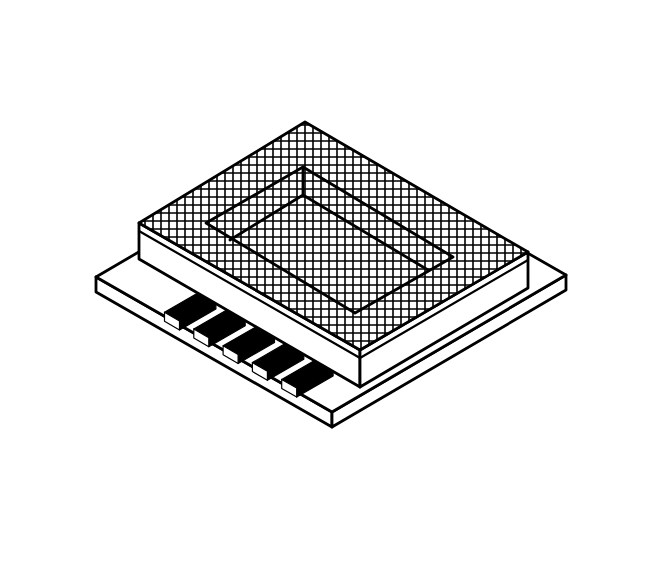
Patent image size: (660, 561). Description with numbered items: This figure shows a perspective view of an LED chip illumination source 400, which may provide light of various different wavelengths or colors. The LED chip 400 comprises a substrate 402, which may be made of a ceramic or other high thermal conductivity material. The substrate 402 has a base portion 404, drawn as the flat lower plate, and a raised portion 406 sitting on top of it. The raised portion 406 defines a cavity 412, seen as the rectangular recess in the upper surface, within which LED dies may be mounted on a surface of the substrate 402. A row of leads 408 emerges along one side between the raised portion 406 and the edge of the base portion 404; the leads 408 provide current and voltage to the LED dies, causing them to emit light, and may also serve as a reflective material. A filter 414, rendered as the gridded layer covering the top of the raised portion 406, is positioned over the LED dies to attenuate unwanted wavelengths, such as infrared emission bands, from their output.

The LED chip illumination source 400 is at (350, 90).
The substrate 402 is at (524, 311).
The base portion 404 is at (118, 270).
The raised portion 406 is at (147, 248).
The leads 408 is at (280, 389).
The cavity 412 is at (379, 227).
The filter 414 is at (246, 176).